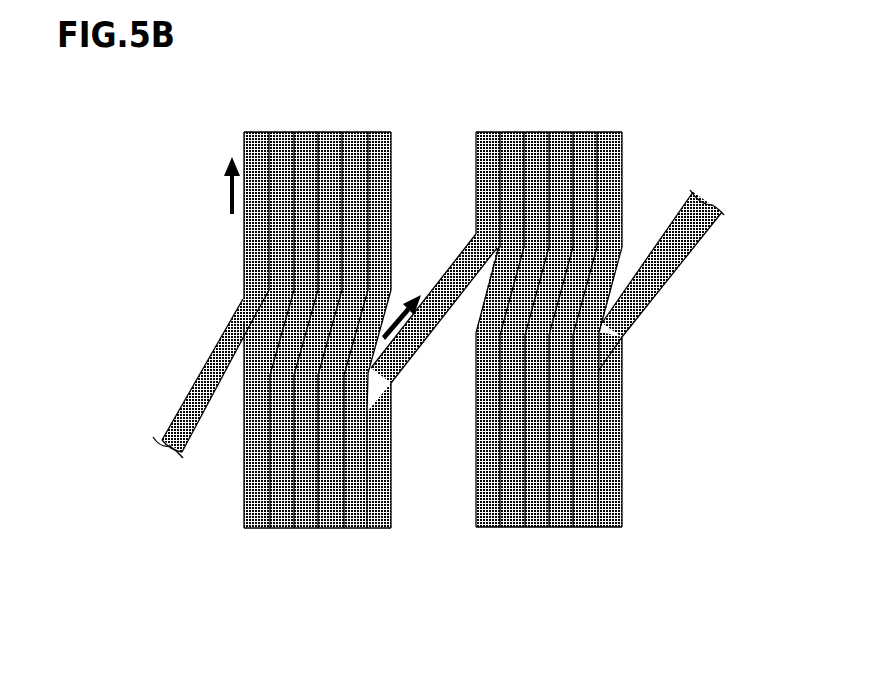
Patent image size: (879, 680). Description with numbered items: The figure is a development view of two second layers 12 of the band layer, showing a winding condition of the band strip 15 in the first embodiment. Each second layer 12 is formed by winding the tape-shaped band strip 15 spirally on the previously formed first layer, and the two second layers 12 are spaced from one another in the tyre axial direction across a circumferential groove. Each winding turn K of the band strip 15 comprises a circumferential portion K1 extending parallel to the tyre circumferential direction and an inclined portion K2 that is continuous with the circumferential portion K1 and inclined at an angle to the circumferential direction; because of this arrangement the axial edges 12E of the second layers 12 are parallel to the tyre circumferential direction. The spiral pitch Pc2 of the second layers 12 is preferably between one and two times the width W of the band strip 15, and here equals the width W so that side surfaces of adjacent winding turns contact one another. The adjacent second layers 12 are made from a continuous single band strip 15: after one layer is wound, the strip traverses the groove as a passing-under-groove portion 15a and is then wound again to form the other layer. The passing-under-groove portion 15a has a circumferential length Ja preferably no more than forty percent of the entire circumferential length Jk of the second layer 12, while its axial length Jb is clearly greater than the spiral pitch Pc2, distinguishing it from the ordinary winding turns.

The second layer 12 is at (391, 585).
The axial edge 12E is at (245, 488).
The band strip 15 is at (245, 229).
The passing-under-groove portion 15a is at (408, 353).
The spiral pitch Pc2 is at (243, 298).
The winding turn K is at (105, 330).
The circumferential portion K1 is at (247, 418).
The inclined portion K2 is at (248, 364).
The width W is at (352, 549).
The circumferential length Ja is at (446, 383).
The axial length Jb is at (475, 130).
The entire circumferential length Jk is at (622, 132).